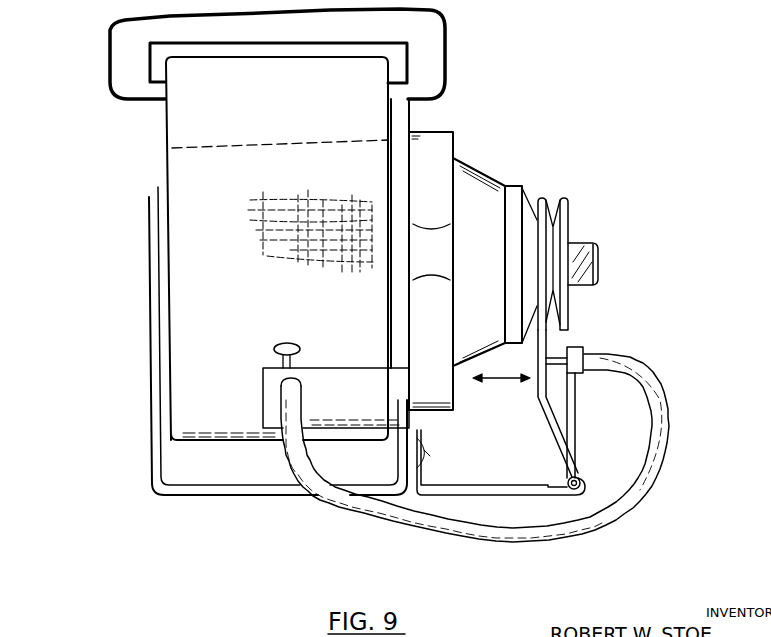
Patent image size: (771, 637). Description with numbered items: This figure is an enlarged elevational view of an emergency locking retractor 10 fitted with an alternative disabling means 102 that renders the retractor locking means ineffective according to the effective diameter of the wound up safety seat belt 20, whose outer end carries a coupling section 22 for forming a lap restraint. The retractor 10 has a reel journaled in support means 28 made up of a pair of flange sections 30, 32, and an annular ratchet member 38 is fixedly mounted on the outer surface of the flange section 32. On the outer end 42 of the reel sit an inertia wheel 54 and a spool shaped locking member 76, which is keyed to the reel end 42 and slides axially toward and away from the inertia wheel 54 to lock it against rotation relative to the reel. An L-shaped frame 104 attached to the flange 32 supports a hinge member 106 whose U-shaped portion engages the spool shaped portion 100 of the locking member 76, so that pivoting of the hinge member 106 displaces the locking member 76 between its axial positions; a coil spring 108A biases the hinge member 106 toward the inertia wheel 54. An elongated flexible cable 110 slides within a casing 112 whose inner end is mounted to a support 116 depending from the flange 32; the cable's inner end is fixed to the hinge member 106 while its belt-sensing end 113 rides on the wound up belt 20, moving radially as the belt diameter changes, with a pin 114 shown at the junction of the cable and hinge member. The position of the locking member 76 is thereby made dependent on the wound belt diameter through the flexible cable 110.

The emergency locking retractor 10 is at (97, 97).
The safety seat belt 20 is at (167, 163).
The coupling section 22 is at (448, 32).
The support means 28 is at (203, 496).
The flange section 30 is at (153, 348).
The flange section 32 is at (408, 117).
The annular ratchet member 38 is at (455, 132).
The outer end of the reel 42 is at (588, 243).
The inertia wheel 54 is at (477, 157).
The locking member 76 is at (508, 188).
The spool shaped portion 100 is at (553, 198).
The disabling means 102 is at (638, 343).
The L-shaped frame 104 is at (507, 486).
The hinge member 106 is at (563, 456).
The coil spring 108A is at (582, 483).
The flexible cable 110 is at (548, 365).
The casing 112 is at (670, 412).
The belt-sensing end 113 is at (274, 351).
The pin 114 is at (577, 393).
The support 116 is at (360, 414).